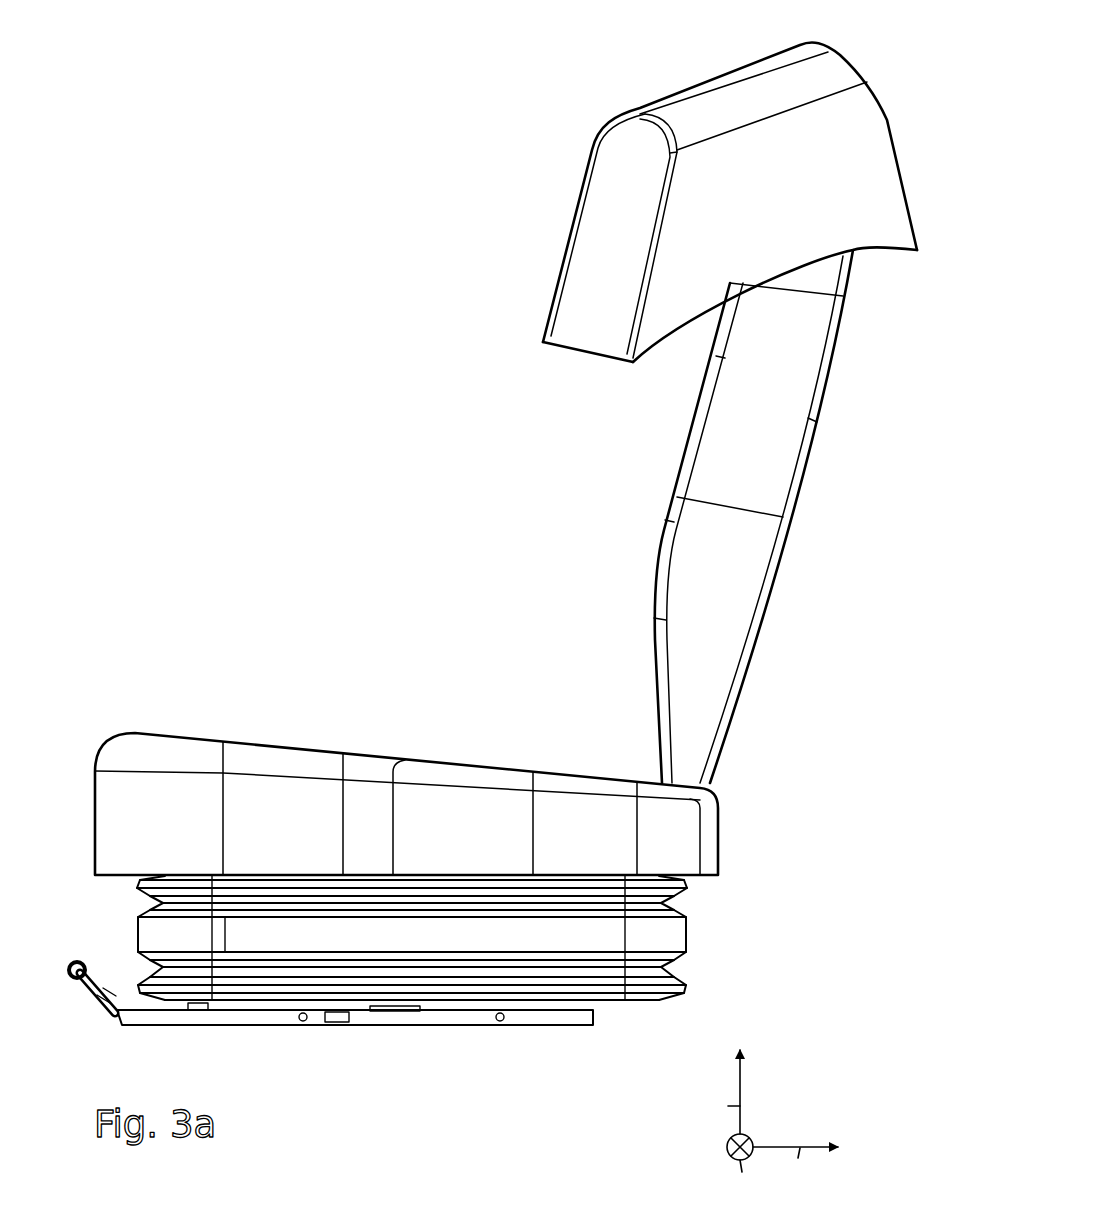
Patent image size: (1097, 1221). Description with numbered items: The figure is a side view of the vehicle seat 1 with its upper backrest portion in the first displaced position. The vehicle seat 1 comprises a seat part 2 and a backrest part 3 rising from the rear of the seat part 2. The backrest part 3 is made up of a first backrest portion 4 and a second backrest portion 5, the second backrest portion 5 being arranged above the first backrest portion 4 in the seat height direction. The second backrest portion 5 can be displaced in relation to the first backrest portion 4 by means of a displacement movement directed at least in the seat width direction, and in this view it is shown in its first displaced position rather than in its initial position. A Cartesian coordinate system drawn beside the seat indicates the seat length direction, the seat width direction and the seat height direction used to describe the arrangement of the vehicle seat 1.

The vehicle seat 1 is at (203, 498).
The seat part 2 is at (91, 807).
The backrest part 3 is at (810, 566).
The first backrest portion 4 is at (806, 486).
The second backrest portion 5 is at (892, 115).